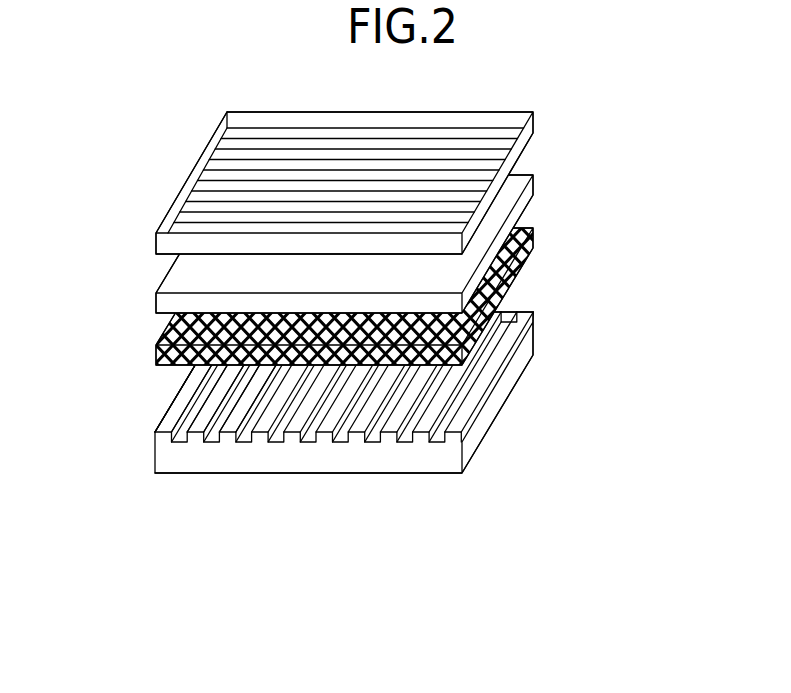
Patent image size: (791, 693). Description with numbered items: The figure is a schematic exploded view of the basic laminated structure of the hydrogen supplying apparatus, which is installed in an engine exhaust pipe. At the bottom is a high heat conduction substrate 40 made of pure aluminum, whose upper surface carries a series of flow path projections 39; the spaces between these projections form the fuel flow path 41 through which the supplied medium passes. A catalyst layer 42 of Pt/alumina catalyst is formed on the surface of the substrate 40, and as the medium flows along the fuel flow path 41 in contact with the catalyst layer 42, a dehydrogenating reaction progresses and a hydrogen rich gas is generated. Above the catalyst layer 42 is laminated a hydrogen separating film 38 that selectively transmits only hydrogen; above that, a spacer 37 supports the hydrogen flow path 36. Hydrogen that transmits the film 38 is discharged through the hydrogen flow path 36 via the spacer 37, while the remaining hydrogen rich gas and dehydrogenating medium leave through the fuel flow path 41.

The hydrogen flow path 36 is at (517, 147).
The spacer 37 is at (517, 211).
The hydrogen separating film 38 is at (522, 263).
The flow path projection 39 is at (443, 437).
The high heat conduction substrate 40 is at (517, 363).
The fuel flow path 41 is at (327, 442).
The catalyst layer 42 is at (247, 419).